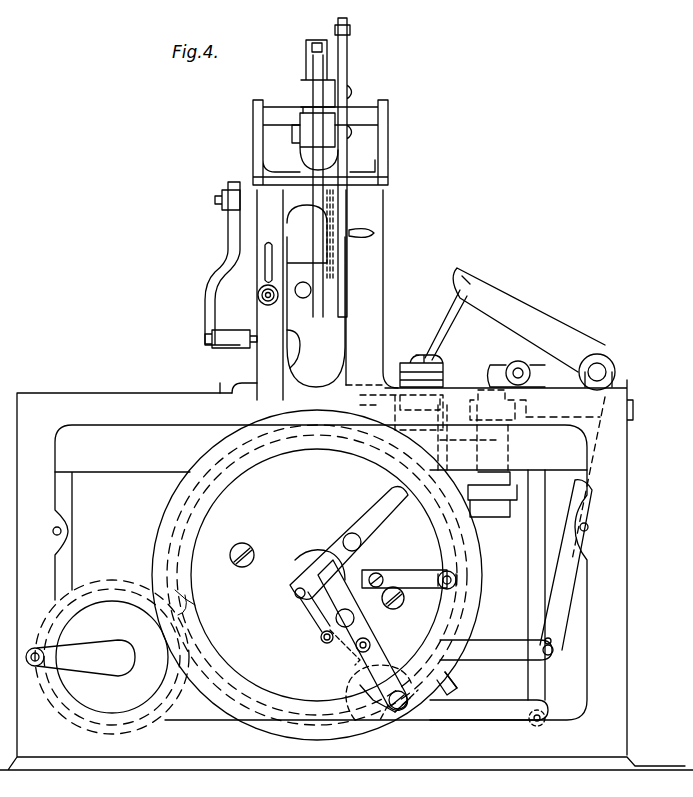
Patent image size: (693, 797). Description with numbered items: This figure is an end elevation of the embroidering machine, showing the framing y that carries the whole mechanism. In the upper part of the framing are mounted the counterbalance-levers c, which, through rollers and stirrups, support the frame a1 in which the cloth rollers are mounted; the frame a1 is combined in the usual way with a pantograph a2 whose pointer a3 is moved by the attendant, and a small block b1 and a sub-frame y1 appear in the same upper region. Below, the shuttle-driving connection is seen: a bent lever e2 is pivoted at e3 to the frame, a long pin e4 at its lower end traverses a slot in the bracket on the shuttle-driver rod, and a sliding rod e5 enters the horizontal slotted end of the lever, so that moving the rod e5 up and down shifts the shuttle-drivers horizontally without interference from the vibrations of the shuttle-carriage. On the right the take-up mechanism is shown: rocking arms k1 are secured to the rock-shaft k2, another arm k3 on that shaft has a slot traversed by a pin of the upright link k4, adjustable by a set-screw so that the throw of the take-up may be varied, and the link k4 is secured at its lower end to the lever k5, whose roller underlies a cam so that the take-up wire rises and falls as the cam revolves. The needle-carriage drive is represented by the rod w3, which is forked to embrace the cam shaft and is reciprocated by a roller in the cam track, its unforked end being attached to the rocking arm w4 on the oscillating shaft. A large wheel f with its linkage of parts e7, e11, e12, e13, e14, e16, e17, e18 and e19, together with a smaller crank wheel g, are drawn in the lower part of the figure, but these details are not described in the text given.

The frame a1 is at (316, 296).
The pantograph a2 is at (349, 57).
The pointer a3 is at (368, 240).
The block b1 is at (308, 142).
The counterbalance-lever c is at (305, 98).
The framing y is at (390, 142).
The sub-frame y1 is at (308, 142).
The bent lever e2 is at (229, 284).
The pivot e3 is at (220, 212).
The pin e4 is at (231, 347).
The sliding rod e5 is at (270, 295).
The hub e7 is at (349, 581).
The pin e11 is at (441, 566).
The bar e12 is at (404, 565).
The tooth e13 is at (452, 690).
The pin e14 is at (368, 630).
The link e16 is at (349, 539).
The link e17 is at (304, 617).
The arm e18 is at (394, 648).
The pawl e19 is at (364, 738).
The wheel f is at (317, 575).
The crank wheel g is at (107, 657).
The rocking arm k1 is at (515, 320).
The rock-shaft k2 is at (608, 360).
The arm k3 is at (517, 364).
The upright link k4 is at (537, 585).
The lever k5 is at (489, 710).
The rod w3 is at (496, 649).
The rocking arm w4 is at (566, 565).